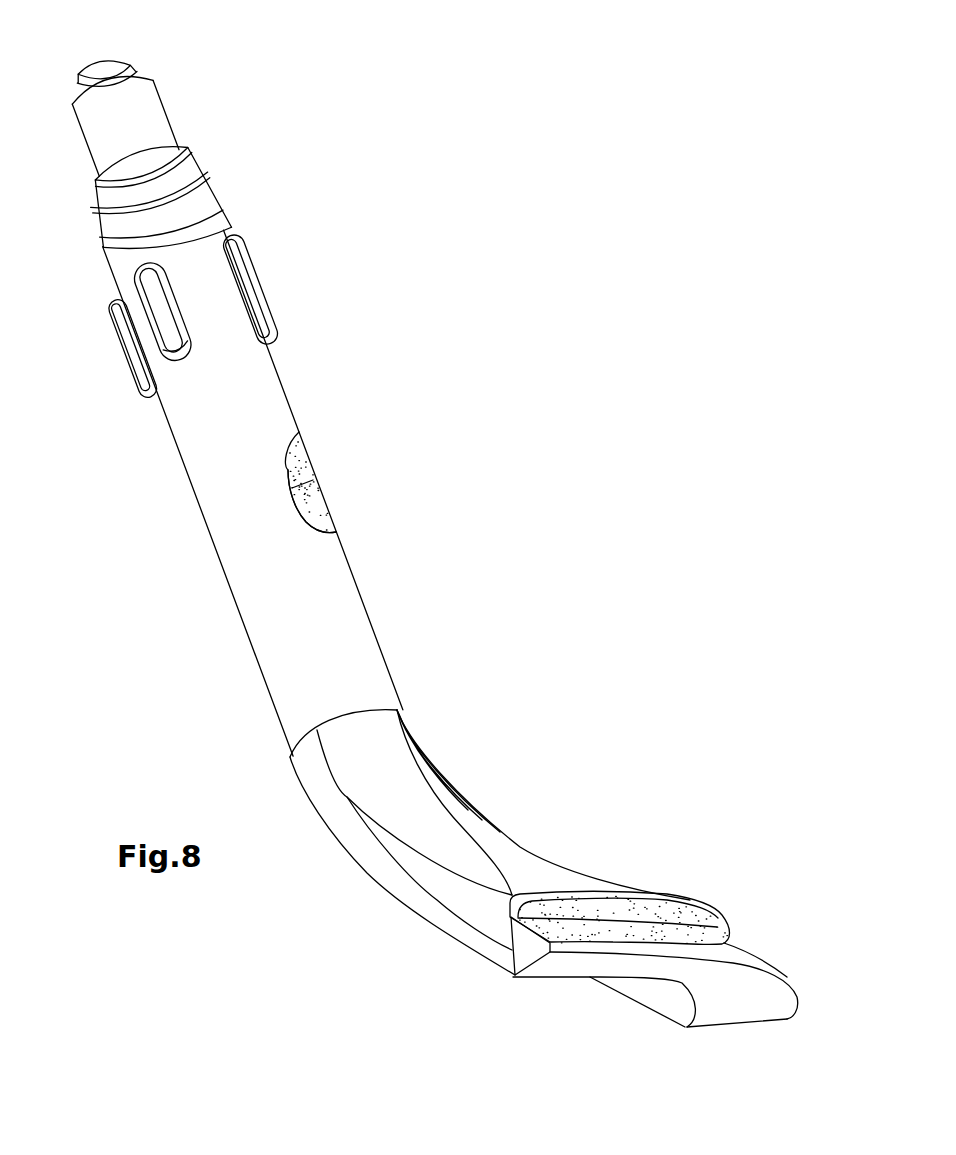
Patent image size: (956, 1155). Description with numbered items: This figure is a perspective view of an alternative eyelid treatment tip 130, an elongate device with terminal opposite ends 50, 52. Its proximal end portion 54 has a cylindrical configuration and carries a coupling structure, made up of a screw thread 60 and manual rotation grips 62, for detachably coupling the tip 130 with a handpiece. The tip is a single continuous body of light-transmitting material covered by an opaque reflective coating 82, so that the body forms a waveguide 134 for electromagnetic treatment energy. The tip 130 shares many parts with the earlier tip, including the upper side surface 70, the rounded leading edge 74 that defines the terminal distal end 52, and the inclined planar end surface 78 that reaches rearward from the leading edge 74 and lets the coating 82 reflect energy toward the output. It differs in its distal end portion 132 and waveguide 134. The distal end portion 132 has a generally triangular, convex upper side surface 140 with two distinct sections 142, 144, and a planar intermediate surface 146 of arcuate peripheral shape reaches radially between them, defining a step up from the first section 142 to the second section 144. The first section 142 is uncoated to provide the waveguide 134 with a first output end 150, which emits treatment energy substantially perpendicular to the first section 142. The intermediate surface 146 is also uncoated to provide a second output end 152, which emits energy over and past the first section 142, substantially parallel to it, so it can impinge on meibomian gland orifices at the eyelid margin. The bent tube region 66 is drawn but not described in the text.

The terminal proximal end 50 is at (100, 53).
The terminal distal end 52 is at (763, 958).
The proximal end portion 54 is at (217, 483).
The screw thread 60 is at (203, 167).
The manual rotation grips 62 is at (243, 233).
The inner tube 66 is at (327, 830).
The upper side surface 70 is at (663, 1000).
The rounded leading edge 74 is at (783, 970).
The planar end surface 78 is at (757, 1000).
The opaque reflective coating 82 is at (300, 483).
The alternative tip 130 is at (455, 407).
The distal end portion 132 is at (407, 912).
The waveguide 134 is at (317, 505).
The upper side surface 140 is at (520, 867).
The first section 142 is at (580, 927).
The second section 144 is at (543, 872).
The planar intermediate surface 146 is at (722, 915).
The first output end 150 is at (523, 942).
The second output end 152 is at (731, 933).